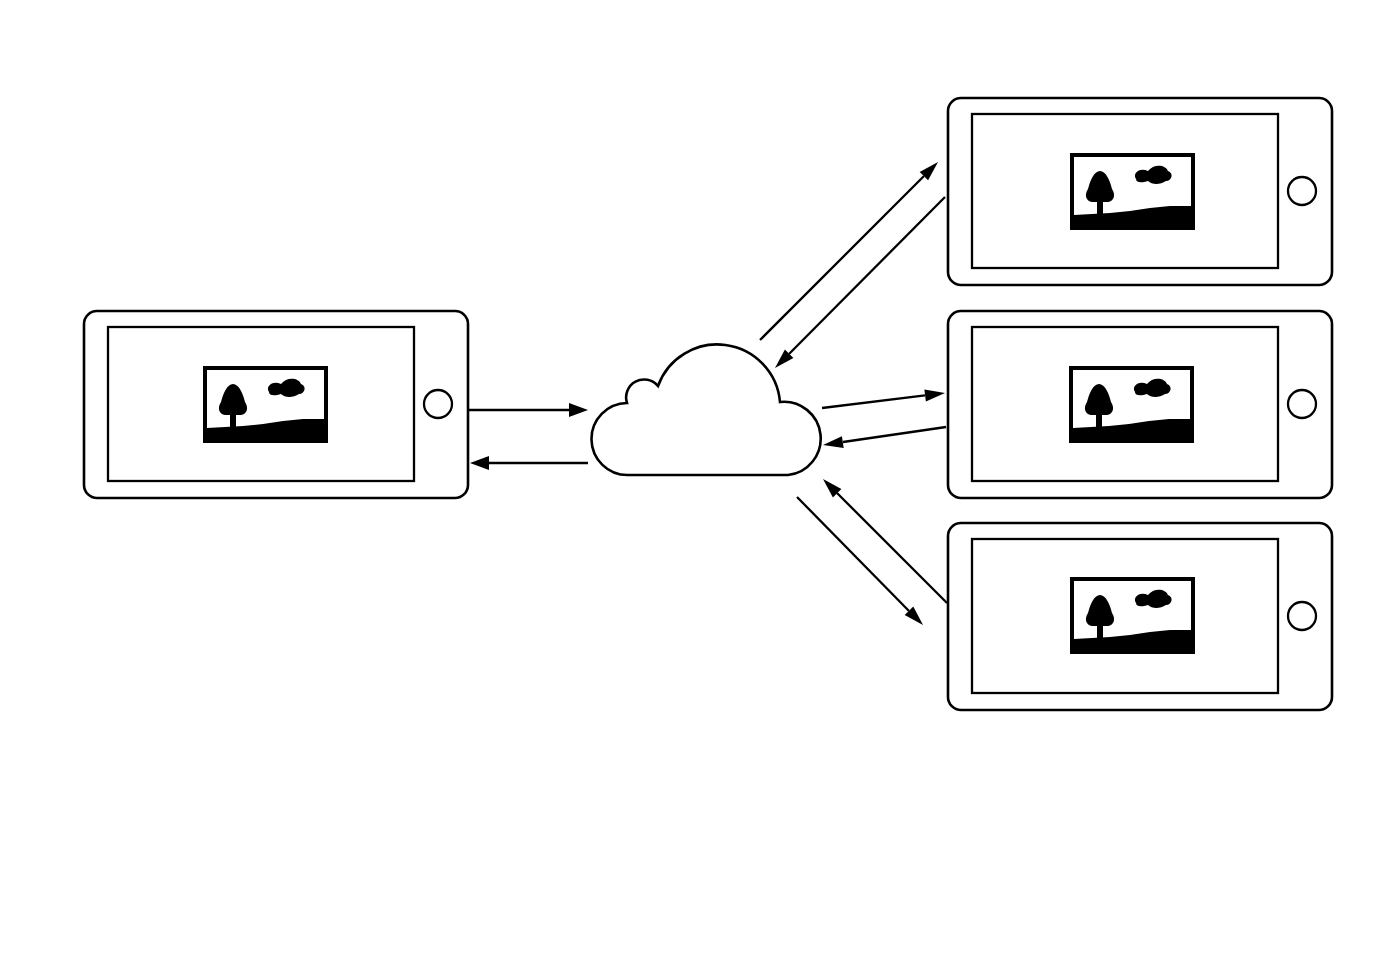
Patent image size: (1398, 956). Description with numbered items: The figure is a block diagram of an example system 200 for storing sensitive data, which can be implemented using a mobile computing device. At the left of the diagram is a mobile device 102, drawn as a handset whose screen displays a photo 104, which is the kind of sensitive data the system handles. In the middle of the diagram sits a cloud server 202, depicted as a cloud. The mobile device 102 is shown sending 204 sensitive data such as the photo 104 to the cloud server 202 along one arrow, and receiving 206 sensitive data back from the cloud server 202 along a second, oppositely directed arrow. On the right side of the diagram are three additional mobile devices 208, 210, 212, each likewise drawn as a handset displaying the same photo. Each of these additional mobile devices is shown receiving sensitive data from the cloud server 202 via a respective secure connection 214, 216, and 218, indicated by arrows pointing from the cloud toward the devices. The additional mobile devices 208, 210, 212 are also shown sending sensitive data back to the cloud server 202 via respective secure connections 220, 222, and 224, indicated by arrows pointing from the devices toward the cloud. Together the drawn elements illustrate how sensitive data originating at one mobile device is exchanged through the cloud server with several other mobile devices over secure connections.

The mobile device 102 is at (206, 310).
The photo 104 is at (259, 443).
The example system 200 is at (760, 805).
The cloud server 202 is at (718, 345).
The sending 204 is at (487, 408).
The receiving 206 is at (540, 465).
The additional mobile device 208 is at (1088, 97).
The additional mobile device 210 is at (1298, 315).
The additional mobile device 212 is at (1070, 712).
The secure connection 214 is at (912, 185).
The secure connection 216 is at (900, 393).
The secure connection 218 is at (862, 568).
The secure connection 220 is at (858, 283).
The secure connection 222 is at (857, 447).
The secure connection 224 is at (868, 520).